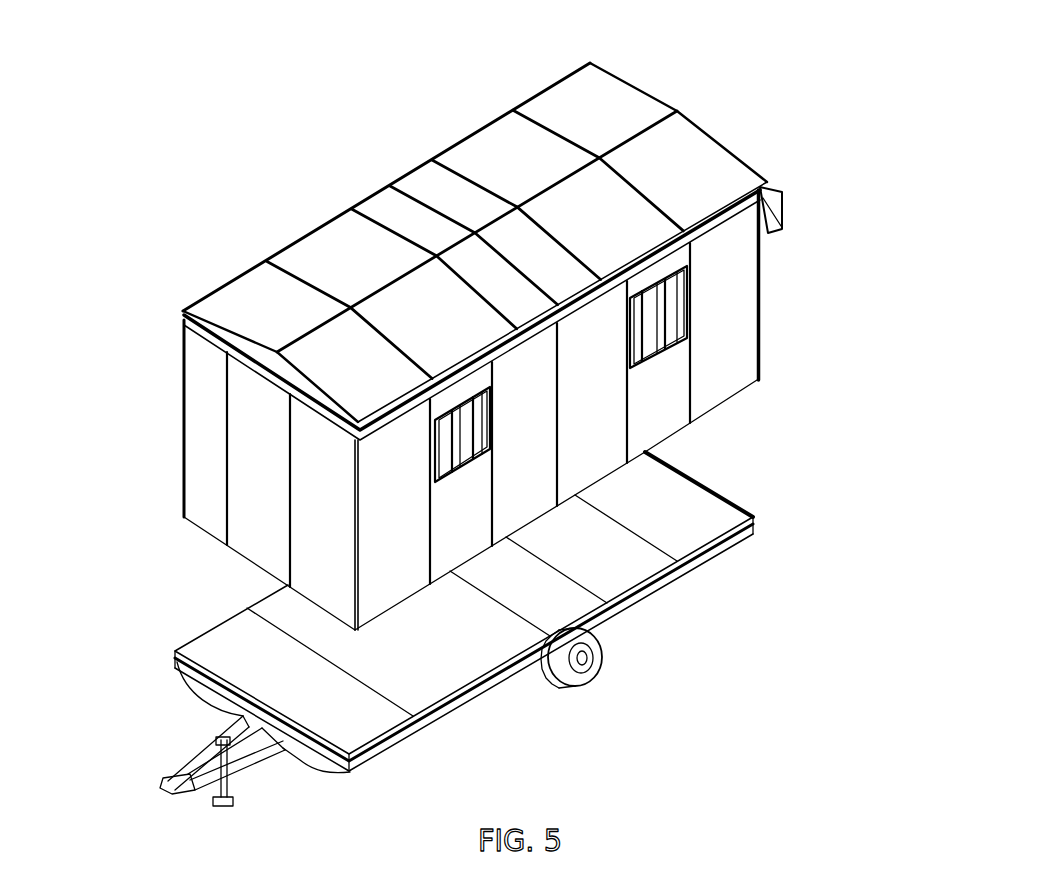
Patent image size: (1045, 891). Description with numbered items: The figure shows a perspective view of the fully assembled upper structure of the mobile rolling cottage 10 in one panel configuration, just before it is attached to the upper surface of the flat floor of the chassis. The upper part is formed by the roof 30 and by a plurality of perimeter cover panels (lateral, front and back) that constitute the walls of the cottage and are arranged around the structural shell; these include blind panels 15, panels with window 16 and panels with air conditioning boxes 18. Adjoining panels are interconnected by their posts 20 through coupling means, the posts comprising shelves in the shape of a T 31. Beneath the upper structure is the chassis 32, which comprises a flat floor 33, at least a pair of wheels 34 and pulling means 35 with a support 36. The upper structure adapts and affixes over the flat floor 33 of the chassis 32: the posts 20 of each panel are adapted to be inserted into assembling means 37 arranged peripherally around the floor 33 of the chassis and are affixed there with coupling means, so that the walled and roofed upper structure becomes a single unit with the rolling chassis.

The portable building structure 10 is at (345, 212).
The blind panels 15 is at (183, 460).
The panels with window 16 is at (637, 604).
The panels with air conditioning boxes 18 is at (760, 186).
The posts 20 is at (758, 378).
The roof 30 is at (601, 63).
The shelves in the shape of a T 31 is at (183, 394).
The chassis 32 is at (683, 593).
The flat floor 33 is at (390, 663).
The wheels 34 is at (587, 681).
The pulling means 35 is at (278, 757).
The support 36 is at (213, 800).
The assembling means 37 is at (513, 680).